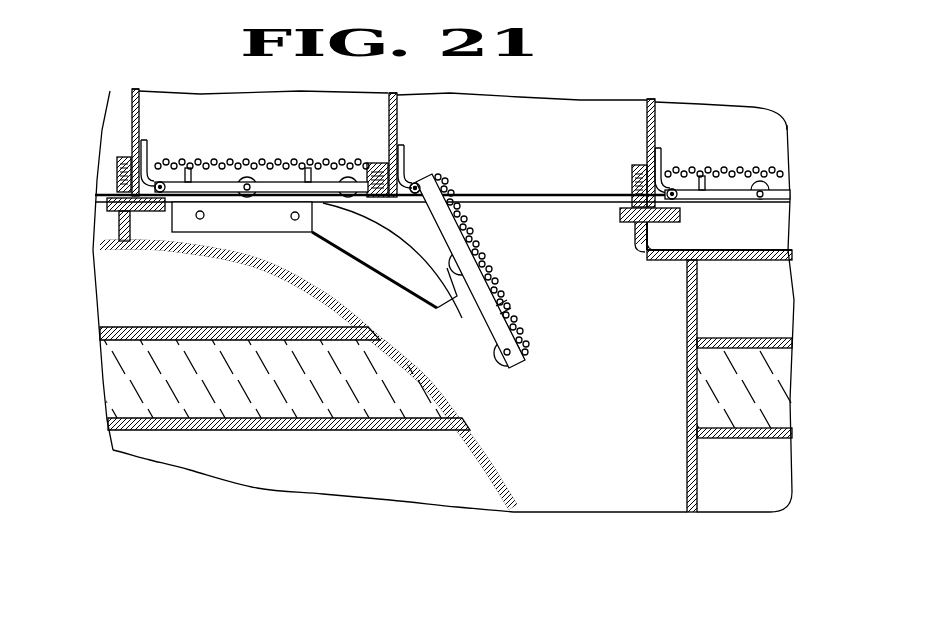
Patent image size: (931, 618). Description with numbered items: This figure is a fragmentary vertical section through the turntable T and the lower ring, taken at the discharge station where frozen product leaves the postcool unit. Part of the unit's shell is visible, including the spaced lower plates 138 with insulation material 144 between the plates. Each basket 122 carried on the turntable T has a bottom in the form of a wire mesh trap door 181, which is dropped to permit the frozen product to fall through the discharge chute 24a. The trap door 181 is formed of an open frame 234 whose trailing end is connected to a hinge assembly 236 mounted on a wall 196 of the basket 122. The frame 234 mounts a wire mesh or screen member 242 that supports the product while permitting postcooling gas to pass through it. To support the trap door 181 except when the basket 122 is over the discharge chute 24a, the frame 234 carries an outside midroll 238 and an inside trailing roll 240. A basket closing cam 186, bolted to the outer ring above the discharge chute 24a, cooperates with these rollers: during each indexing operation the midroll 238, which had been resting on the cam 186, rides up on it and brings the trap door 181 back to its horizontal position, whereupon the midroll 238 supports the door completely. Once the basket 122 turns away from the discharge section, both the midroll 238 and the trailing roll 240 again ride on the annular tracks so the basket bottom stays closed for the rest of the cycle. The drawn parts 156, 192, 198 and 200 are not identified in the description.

The discharge chute 24a is at (562, 427).
The basket 122 is at (133, 88).
The lower plate 138 is at (195, 327).
The insulation material 144 is at (220, 360).
The support web 156 is at (112, 205).
The trap door 181 is at (304, 162).
The basket closing cam 186 is at (420, 272).
The panel 192 is at (108, 130).
The wall 196 is at (134, 110).
The fastener 198 is at (120, 170).
The mounting flange 200 is at (118, 196).
The open frame 234 is at (199, 182).
The hinge assembly 236 is at (144, 140).
The outside midroll 238 is at (246, 193).
The inside trailing roll 240 is at (347, 195).
The wire mesh or screen member 242 is at (176, 162).
The turntable T is at (562, 96).